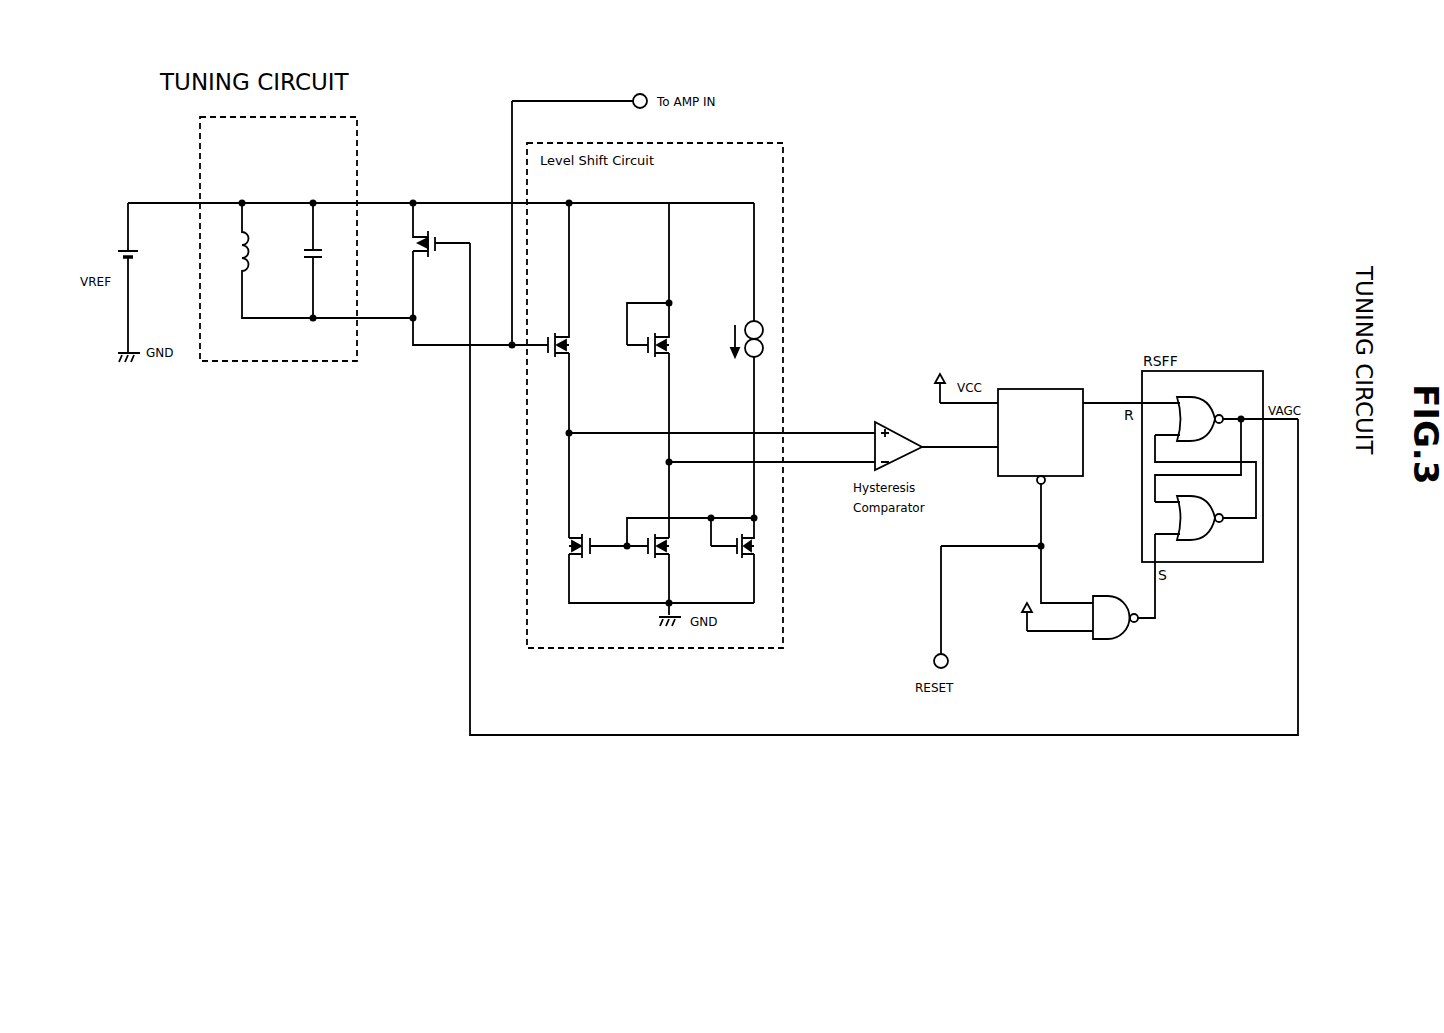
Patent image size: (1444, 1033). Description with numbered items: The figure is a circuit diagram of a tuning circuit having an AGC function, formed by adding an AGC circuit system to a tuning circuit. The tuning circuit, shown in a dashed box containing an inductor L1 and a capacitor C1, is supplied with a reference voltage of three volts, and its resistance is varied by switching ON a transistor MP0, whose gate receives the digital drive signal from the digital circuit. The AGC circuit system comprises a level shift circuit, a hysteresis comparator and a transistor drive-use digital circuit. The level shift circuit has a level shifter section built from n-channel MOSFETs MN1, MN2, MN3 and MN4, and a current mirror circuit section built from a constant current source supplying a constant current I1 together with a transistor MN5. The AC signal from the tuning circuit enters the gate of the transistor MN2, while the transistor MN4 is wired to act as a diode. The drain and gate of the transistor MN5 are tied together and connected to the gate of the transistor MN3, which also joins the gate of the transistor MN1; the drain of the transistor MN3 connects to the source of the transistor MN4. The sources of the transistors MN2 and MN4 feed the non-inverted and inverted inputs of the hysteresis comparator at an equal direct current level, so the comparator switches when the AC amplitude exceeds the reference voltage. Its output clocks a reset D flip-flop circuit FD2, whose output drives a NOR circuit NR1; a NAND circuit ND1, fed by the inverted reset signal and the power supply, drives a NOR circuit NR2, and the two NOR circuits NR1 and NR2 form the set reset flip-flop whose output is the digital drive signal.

The inductor of tuning circuit L1 is at (327, 260).
The capacitor of tuning circuit C1 is at (325, 260).
The transistor MP0 is at (480, 274).
The transistor MN1 is at (661, 568).
The transistor MN2 is at (575, 370).
The transistor MN3 is at (690, 566).
The transistor MN4 is at (648, 370).
The transistor MN5 is at (732, 560).
The constant current I1 is at (743, 360).
The reset D flip-flop circuit FD2 is at (1040, 427).
The NAND circuit ND1 is at (1067, 597).
The NOR circuit NR1 is at (1226, 448).
The NOR circuit NR2 is at (1198, 489).